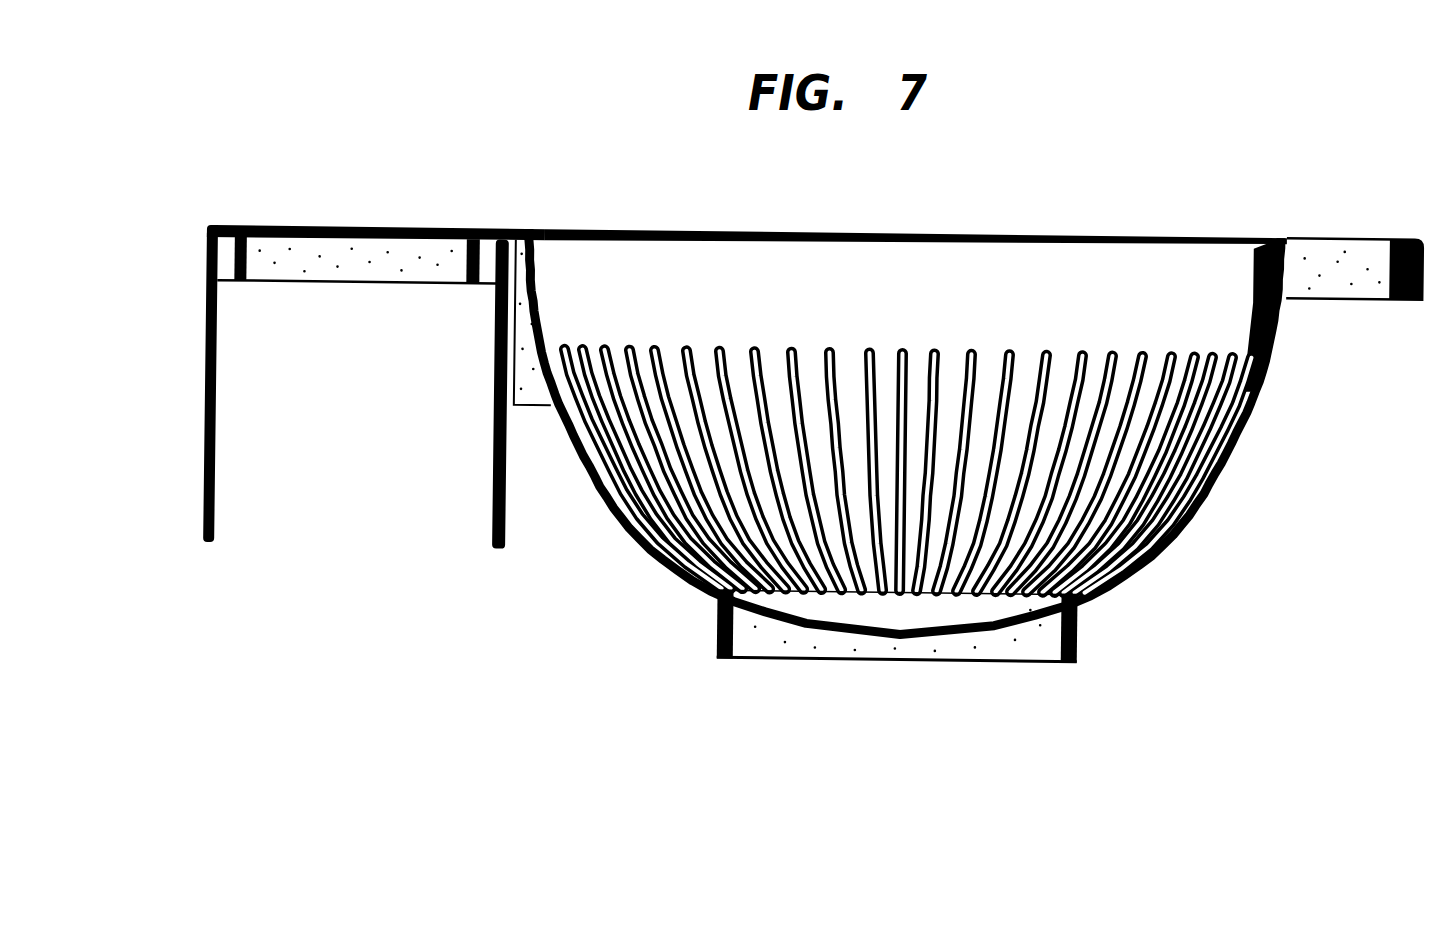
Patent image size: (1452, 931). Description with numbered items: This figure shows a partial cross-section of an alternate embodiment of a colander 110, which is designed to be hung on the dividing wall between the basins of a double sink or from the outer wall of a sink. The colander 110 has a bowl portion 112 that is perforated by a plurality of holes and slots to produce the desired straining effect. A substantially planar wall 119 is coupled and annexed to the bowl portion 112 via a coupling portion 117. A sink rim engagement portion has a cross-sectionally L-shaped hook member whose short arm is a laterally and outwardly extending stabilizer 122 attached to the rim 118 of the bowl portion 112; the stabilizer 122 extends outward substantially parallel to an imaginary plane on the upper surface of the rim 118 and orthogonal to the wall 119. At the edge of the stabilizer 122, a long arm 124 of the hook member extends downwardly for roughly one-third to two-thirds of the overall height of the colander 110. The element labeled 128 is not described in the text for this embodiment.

The colander 110 is at (1078, 733).
The bowl portion 112 is at (1183, 503).
The coupling portion 117 is at (535, 403).
The rim 118 is at (1043, 237).
The wall 119 is at (494, 521).
The stabilizer 122 is at (362, 226).
The long arm 124 is at (205, 320).
The side flange 128 is at (1353, 290).